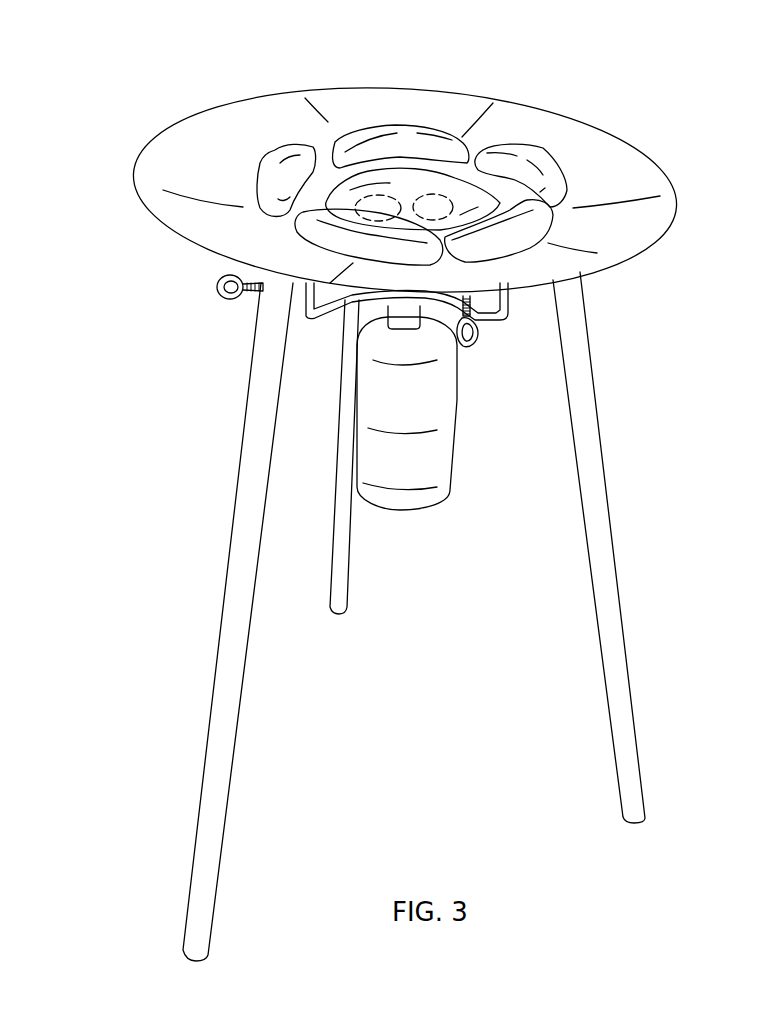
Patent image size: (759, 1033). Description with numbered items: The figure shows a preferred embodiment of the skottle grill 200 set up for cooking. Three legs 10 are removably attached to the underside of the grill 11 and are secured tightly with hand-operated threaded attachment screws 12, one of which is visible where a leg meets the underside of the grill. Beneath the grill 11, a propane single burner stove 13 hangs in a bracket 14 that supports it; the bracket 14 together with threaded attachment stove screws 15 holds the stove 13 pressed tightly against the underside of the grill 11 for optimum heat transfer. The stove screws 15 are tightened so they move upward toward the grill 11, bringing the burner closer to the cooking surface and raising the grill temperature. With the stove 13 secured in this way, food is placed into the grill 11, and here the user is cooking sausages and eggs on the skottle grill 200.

The skottle grill 200 is at (644, 117).
The legs 10 is at (233, 522).
The grill 11 is at (173, 240).
The hand-operated threaded attachment screws 12 is at (220, 300).
The propane single burner stove 13 is at (417, 467).
The bracket 14 is at (507, 313).
The threaded attachment stove screws 15 is at (473, 350).